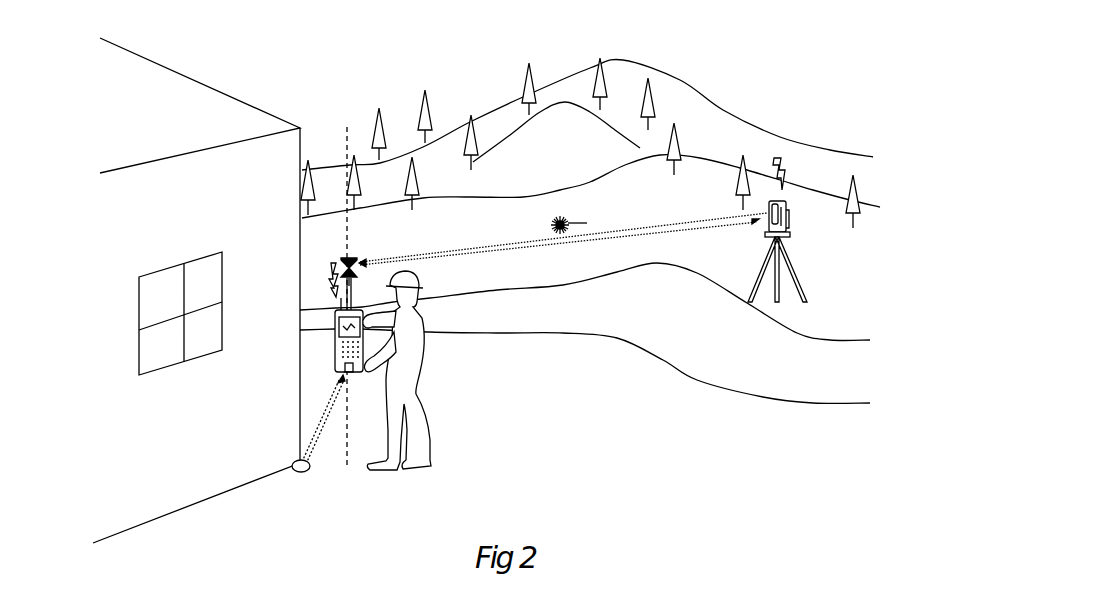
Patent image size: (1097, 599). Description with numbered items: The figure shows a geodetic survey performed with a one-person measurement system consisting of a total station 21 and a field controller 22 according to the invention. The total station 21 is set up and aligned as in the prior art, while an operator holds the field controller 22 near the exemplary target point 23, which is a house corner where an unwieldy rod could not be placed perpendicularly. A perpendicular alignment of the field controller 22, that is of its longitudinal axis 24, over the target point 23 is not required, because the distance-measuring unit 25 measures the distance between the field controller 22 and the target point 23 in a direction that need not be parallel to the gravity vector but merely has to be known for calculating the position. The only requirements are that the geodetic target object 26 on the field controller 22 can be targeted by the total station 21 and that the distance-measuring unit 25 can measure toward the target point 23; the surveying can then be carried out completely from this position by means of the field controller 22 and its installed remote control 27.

The total station 21 is at (755, 244).
The field controller 22 is at (327, 339).
The target point 23 is at (292, 471).
The longitudinal axis 24 is at (347, 137).
The distance-measuring unit 25 is at (337, 372).
The geodetic target object 26 is at (342, 258).
The remote control 27 is at (333, 298).